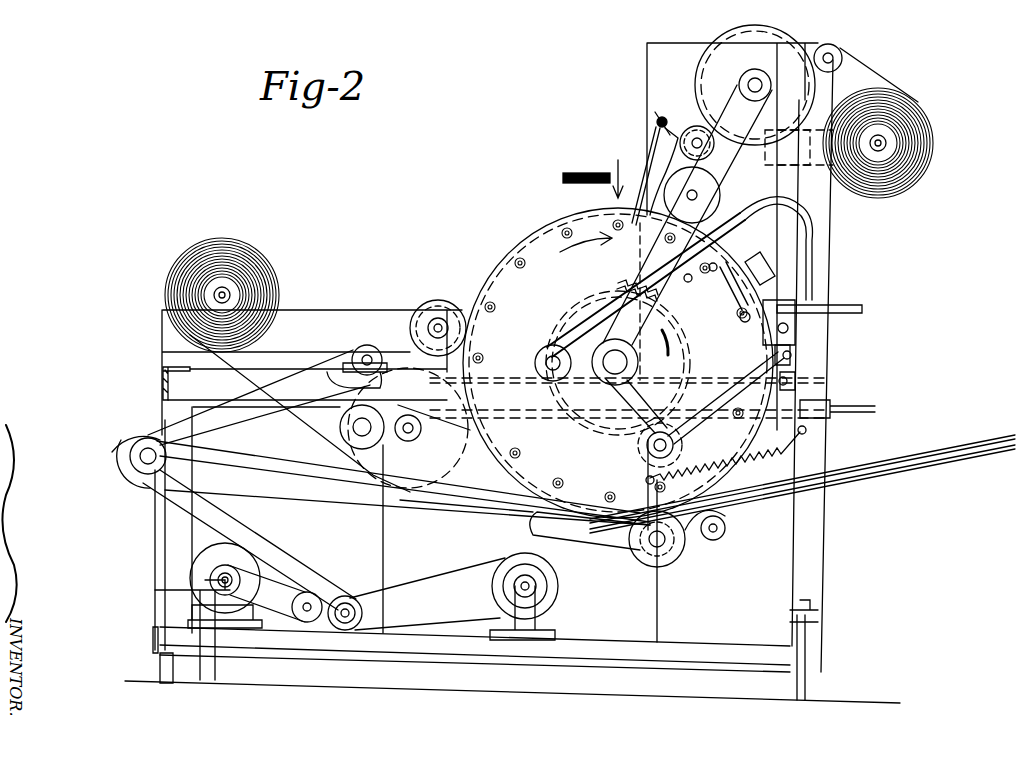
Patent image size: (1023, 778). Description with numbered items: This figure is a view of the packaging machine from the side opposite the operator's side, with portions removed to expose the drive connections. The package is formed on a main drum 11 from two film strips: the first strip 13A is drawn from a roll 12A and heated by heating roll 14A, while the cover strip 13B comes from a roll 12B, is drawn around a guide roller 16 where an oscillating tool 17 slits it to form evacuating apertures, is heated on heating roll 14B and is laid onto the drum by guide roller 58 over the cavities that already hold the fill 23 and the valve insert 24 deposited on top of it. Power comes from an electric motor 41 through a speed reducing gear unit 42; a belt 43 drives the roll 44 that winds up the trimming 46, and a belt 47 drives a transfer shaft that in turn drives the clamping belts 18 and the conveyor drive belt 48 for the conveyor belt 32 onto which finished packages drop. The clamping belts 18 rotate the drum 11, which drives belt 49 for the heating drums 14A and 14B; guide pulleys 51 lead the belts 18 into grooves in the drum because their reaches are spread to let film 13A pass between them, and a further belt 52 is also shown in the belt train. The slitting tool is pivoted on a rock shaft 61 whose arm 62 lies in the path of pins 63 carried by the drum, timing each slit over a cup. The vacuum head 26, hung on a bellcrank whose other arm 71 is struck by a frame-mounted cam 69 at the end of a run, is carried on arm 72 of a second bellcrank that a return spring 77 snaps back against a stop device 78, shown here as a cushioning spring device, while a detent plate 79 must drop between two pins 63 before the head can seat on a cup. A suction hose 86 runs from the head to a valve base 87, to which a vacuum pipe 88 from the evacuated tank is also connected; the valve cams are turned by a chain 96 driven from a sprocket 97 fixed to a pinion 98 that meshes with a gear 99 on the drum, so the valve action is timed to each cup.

The main drum 11 is at (533, 250).
The roll 12A is at (270, 268).
The roll 12B is at (905, 183).
The strip 13A is at (165, 352).
The cover strip 13B is at (848, 58).
The heating roll 14A is at (452, 468).
The heating roll 14B is at (748, 40).
The guide roller 16 is at (704, 150).
The tool 17 is at (676, 132).
The clamping belts 18 is at (330, 360).
The fill 23 is at (562, 174).
The valve insert 24 is at (595, 155).
The vacuum head 26 is at (738, 272).
The conveyor belt 32 is at (898, 448).
The electric motor 41 is at (200, 566).
The speed reducing gear unit 42 is at (352, 594).
The belt 43 is at (443, 578).
The roll 44 is at (545, 588).
The trimming 46 is at (526, 545).
The belt 47 is at (258, 512).
The conveyor drive belt 48 is at (598, 545).
The belt 49 is at (728, 172).
The guide pulleys 51 is at (437, 300).
The belt 52 is at (216, 404).
The guide roller 58 is at (710, 190).
The rock shaft 61 is at (658, 122).
The arm 62 is at (655, 150).
The pins 63 is at (525, 266).
The cam 69 is at (676, 338).
The arm 71 is at (708, 275).
The arm 72 is at (690, 284).
The return spring 77 is at (745, 455).
The stop device 78 is at (645, 300).
The detent plate 79 is at (743, 312).
The suction hose 86 is at (815, 243).
The valve base 87 is at (798, 322).
The vacuum pipe 88 is at (873, 306).
The chain 96 is at (740, 376).
The sprocket 97 is at (648, 446).
The pinion 98 is at (645, 455).
The gear 99 is at (582, 412).